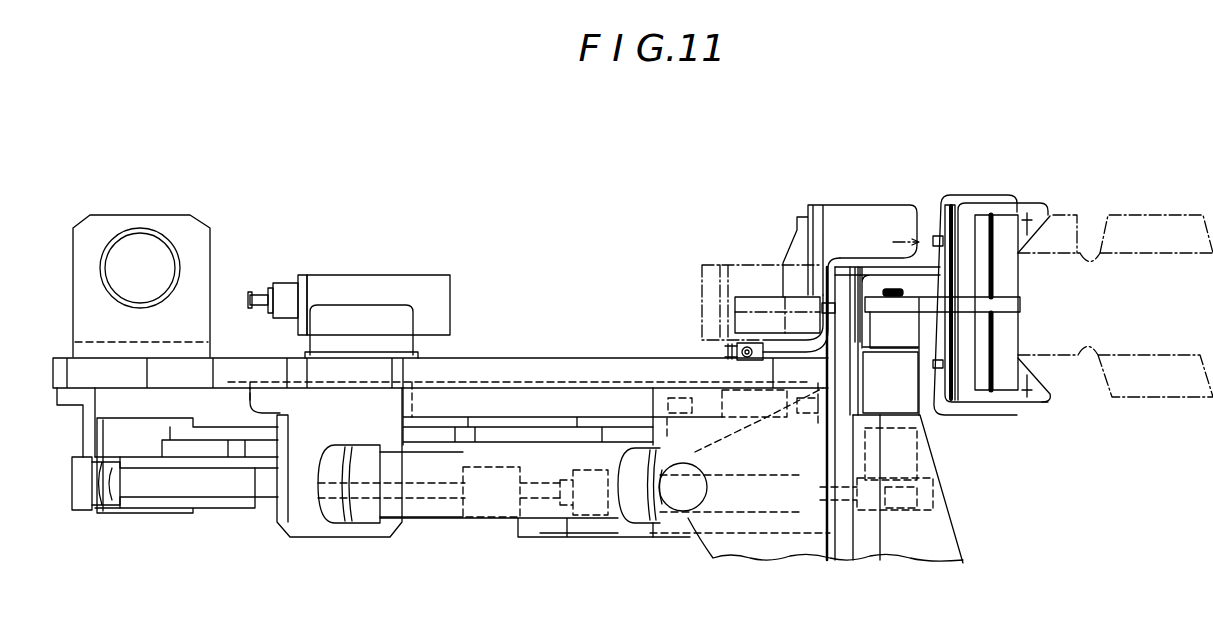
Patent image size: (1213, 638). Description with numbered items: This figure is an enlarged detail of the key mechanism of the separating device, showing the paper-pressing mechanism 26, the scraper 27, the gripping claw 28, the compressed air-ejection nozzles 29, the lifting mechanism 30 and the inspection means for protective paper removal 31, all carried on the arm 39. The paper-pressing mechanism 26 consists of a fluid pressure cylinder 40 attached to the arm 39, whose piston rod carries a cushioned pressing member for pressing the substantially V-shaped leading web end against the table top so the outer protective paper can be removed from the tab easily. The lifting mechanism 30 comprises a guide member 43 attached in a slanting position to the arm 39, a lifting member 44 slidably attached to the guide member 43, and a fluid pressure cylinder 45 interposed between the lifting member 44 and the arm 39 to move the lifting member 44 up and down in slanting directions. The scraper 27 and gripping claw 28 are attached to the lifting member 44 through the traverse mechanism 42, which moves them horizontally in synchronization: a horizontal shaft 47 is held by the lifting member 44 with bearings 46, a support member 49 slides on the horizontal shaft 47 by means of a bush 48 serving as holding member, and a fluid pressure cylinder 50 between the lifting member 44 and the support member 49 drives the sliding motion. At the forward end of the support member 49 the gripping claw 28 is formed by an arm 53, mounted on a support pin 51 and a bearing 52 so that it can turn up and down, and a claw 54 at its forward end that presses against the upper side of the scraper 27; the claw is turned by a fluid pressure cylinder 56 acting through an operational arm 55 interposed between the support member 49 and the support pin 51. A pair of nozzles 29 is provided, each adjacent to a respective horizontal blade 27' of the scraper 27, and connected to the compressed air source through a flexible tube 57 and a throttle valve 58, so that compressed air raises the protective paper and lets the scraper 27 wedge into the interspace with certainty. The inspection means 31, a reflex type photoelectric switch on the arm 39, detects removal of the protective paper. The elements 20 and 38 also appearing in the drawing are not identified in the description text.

The workpiece 20 is at (1160, 214).
The paper-pressing mechanism 26 is at (148, 226).
The scraper 27 is at (915, 264).
The horizontal blade 27' is at (1058, 298).
The gripping claw 28 is at (1070, 290).
The compressed air-ejection nozzles 29 is at (1013, 197).
The lifting mechanism 30 is at (528, 367).
The inspection means for protective paper removal 31 is at (370, 285).
The frame 38 is at (903, 548).
The arm 39 is at (635, 368).
The fluid pressure cylinder 40 is at (160, 268).
The traverse mechanism 42 is at (582, 383).
The guide member 43 is at (502, 398).
The lifting member 44 is at (532, 433).
The fluid pressure cylinder 45 is at (442, 465).
The bearings 46 is at (303, 510).
The horizontal shaft 47 is at (447, 500).
The bush 48 is at (503, 510).
The support member 49 is at (460, 578).
The fluid pressure cylinder 50 is at (598, 382).
The support pin 51 is at (895, 288).
The bearing 52 is at (905, 403).
The arm 53 is at (743, 303).
The claw 54 is at (1010, 333).
The operational arm 55 is at (933, 495).
The fluid pressure cylinder 56 is at (725, 513).
The flexible tube 57 is at (817, 343).
The throttle valve 58 is at (727, 352).